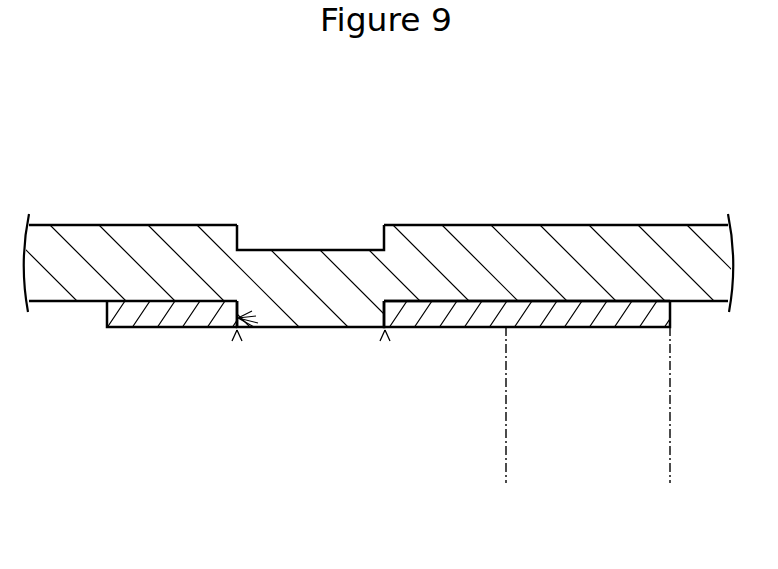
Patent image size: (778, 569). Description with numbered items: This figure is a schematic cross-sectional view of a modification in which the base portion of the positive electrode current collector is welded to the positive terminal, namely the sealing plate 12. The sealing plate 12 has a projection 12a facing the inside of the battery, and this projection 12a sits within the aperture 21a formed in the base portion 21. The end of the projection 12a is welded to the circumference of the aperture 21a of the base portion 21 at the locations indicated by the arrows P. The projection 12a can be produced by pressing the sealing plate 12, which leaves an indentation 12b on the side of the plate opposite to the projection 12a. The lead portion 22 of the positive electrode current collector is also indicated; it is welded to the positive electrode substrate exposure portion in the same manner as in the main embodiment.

The sealing plate 12 is at (618, 243).
The projection 12a is at (317, 307).
The indentation 12b is at (314, 230).
The base portion 21 is at (120, 322).
The aperture 21a is at (244, 322).
The arrows P is at (237, 332).
The lead portion 22 is at (657, 396).